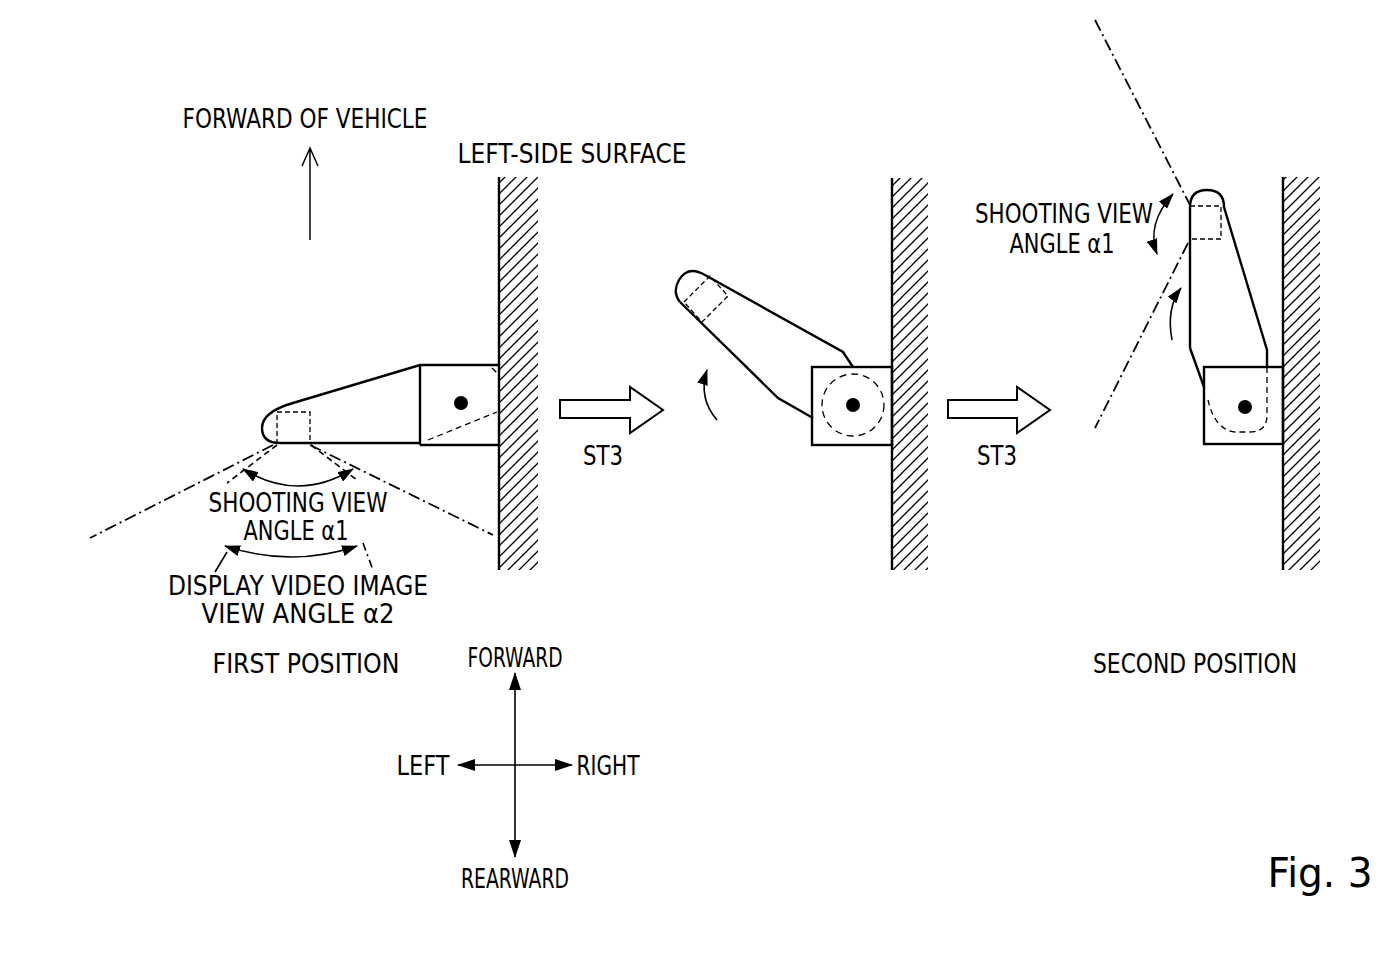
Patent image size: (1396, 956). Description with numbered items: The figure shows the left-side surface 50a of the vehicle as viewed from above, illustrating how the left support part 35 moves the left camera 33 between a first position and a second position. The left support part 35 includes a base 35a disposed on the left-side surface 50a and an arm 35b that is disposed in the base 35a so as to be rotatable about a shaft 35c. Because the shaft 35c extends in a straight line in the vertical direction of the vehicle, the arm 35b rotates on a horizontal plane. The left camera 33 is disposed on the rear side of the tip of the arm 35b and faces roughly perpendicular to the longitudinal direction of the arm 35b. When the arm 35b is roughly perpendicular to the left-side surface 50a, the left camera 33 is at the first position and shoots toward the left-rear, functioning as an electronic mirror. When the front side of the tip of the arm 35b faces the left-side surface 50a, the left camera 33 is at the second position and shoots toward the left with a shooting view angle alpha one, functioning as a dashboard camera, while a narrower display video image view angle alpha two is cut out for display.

The left camera 33 is at (290, 422).
The left support part 35 is at (393, 386).
The base 35a is at (471, 447).
The arm 35b is at (390, 428).
The shaft 35c is at (461, 396).
The left-side surface 50a is at (499, 193).